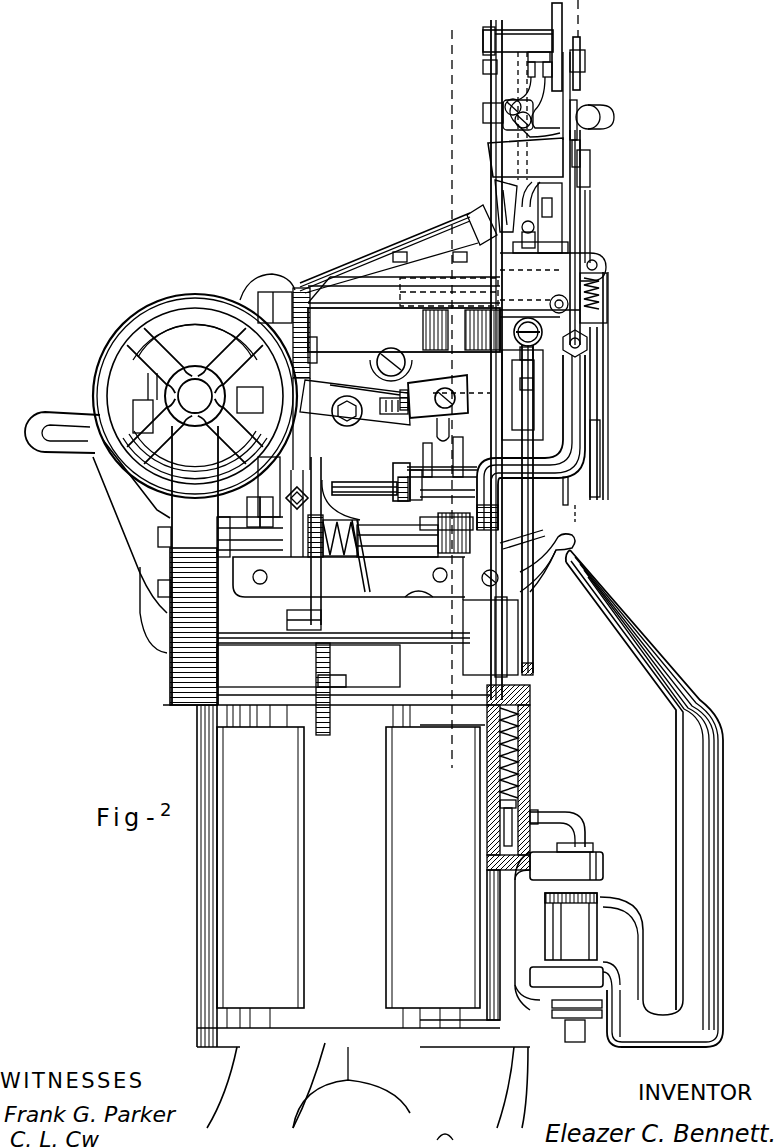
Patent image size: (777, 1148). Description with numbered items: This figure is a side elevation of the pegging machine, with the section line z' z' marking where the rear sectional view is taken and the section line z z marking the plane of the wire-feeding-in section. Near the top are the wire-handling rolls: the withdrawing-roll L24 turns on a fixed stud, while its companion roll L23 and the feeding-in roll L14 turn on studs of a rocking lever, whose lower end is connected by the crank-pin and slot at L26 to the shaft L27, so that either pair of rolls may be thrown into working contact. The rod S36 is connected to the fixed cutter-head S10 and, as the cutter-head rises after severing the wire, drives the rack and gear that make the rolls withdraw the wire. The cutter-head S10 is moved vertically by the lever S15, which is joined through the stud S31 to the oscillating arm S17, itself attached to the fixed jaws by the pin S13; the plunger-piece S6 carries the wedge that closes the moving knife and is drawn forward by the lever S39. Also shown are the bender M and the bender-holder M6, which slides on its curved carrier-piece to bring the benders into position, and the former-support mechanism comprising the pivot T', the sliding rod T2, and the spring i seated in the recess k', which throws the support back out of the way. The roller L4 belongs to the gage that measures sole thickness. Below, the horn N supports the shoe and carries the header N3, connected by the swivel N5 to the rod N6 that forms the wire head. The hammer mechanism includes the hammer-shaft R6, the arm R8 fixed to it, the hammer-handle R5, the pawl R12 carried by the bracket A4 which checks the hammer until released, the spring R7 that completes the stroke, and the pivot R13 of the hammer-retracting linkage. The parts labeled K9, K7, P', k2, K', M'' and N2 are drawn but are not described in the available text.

The section line z' is at (512, 392).
The withdrawing feed-roller L23 is at (580, 56).
The rod S36 is at (479, 74).
The roller L4 is at (535, 124).
The feeding-in roller L14 is at (584, 158).
The withdrawing-roll L24 is at (525, 195).
The crank-pin and slot connection L26 is at (487, 192).
The shaft L27 is at (428, 240).
The bar K9 is at (334, 291).
The slide block K7 is at (449, 292).
The pawl screw P' is at (539, 315).
The pivot pin k2 is at (612, 270).
The spring i is at (610, 284).
The recess k' is at (609, 299).
The sliding rod T2 is at (603, 402).
The pivot T' is at (603, 389).
The hammer-handle R5 is at (531, 442).
The rod N6 is at (534, 656).
The bracket K' is at (557, 491).
The section line z is at (580, 520).
The stud S31 is at (426, 383).
The pin S13 is at (355, 408).
The lever S15 is at (351, 426).
The oscillating arm S17 is at (442, 447).
The plunger-piece S6 is at (364, 480).
The fixed cutter-head S10 is at (434, 496).
The lever S39 is at (383, 525).
The arm R8 is at (304, 513).
The pawl R12 is at (302, 541).
The pivot R13 is at (291, 618).
The hammer-shaft R6 is at (396, 535).
The spring R7 is at (352, 556).
The bracket A4 is at (322, 618).
The bender M is at (509, 613).
The bender-holder M6 is at (522, 533).
The hook M'' is at (547, 560).
The header N3 is at (575, 602).
The horn N is at (703, 850).
The pivot bracket N2 is at (604, 880).
The swivel N5 is at (562, 1027).